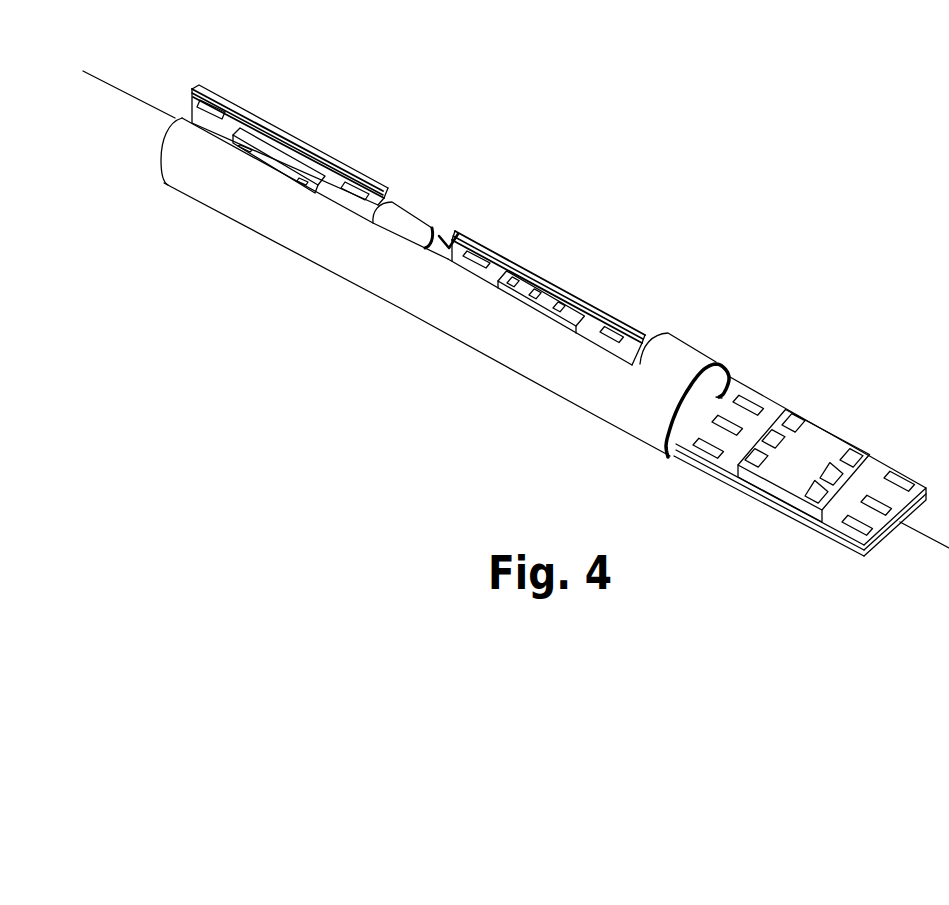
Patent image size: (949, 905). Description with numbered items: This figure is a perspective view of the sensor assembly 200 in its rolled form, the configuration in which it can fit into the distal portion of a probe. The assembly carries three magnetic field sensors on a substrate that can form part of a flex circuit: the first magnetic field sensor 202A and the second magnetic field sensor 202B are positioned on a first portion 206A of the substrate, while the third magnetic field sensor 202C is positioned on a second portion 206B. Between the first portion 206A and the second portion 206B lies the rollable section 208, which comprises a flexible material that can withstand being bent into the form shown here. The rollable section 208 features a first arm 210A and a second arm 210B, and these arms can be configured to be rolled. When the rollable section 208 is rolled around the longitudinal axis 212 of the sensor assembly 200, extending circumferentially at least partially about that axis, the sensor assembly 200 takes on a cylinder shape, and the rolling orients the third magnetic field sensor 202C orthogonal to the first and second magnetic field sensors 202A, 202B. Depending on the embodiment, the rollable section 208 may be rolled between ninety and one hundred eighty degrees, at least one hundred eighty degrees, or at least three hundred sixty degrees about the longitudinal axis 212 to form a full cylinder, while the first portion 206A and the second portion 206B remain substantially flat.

The sensor assembly 200 is at (441, 109).
The first magnetic field sensor 202A is at (293, 152).
The second magnetic field sensor 202B is at (542, 291).
The third magnetic field sensor 202C is at (823, 437).
The first portion 206A is at (233, 121).
The second portion 206B is at (829, 522).
The rollable section 208 is at (466, 340).
The first arm 210A is at (412, 222).
The second arm 210B is at (688, 352).
The longitudinal axis 212 is at (101, 80).